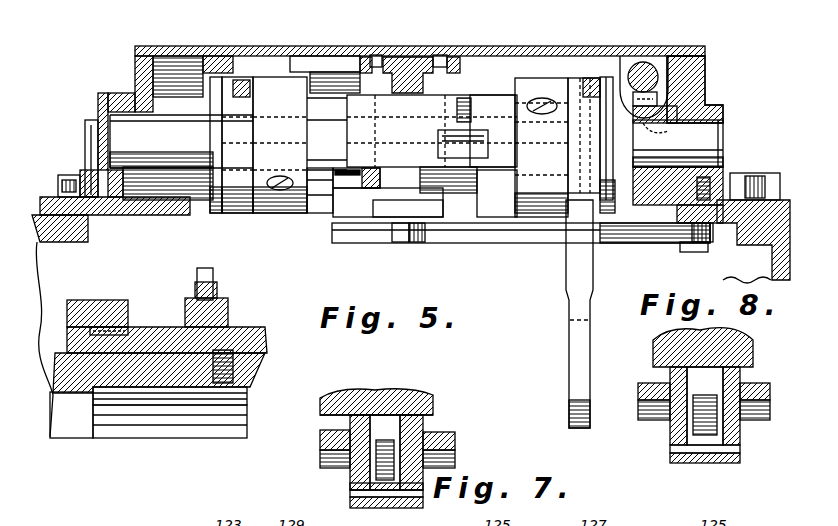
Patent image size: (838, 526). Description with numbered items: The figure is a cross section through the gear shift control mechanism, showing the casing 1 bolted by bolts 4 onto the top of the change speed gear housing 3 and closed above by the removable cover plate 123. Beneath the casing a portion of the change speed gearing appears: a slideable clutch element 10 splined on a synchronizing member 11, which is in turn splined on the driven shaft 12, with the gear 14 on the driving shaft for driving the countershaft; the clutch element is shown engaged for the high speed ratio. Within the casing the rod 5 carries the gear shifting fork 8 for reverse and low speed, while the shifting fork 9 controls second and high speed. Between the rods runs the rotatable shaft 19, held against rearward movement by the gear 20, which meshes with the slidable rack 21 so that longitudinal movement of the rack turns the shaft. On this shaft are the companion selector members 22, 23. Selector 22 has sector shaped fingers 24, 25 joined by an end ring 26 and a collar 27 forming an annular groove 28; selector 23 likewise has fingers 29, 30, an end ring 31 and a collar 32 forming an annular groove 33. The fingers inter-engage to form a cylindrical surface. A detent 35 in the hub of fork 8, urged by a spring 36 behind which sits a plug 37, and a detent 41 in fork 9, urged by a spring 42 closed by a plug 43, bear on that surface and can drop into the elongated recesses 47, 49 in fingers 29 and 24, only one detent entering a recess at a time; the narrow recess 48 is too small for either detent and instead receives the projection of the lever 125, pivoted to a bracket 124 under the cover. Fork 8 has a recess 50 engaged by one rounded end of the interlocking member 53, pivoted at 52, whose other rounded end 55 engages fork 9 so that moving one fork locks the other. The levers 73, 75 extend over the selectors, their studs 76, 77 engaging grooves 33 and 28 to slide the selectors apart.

In FIG. 5, the casing 1 is at (705, 105).
In FIG. 5, the change speed gear housing 3 is at (790, 225).
In FIG. 5, the bolts 4 is at (103, 93).
In FIG. 5, the rod 5 is at (90, 117).
In FIG. 5, the gear shifting fork 8 is at (593, 282).
In FIG. 5, the shifting fork 9 is at (214, 274).
In FIG. 7, the shifting fork 9 is at (455, 440).
In FIG. 8, the shifting fork 9 is at (745, 392).
In FIG. 5, the slideable clutch element 10 is at (228, 318).
In FIG. 5, the synchronizing member 11 is at (250, 367).
In FIG. 5, the driven shaft 12 is at (248, 403).
In FIG. 5, the gear 14 is at (105, 317).
In FIG. 5, the rotatable shaft 19 is at (707, 140).
In FIG. 5, the gear 20 is at (655, 105).
In FIG. 5, the slidable rack 21 is at (645, 62).
In FIG. 5, the selector member 22 is at (232, 185).
In FIG. 5, the selector member 23 is at (614, 192).
In FIG. 5, the sector shaped finger 24 is at (322, 183).
In FIG. 7, the sector shaped finger 24 is at (425, 395).
In FIG. 5, the sector shaped finger 25 is at (322, 112).
In FIG. 5, the end ring 26 is at (217, 103).
In FIG. 5, the collar 27 is at (284, 92).
In FIG. 5, the annular groove 28 is at (229, 105).
In FIG. 5, the sector shaped finger 29 is at (493, 107).
In FIG. 5, the sector shaped finger 30 is at (497, 183).
In FIG. 8, the sector shaped finger 30 is at (748, 340).
In FIG. 5, the end ring 31 is at (606, 77).
In FIG. 5, the collar 32 is at (527, 90).
In FIG. 5, the annular groove 33 is at (585, 155).
In FIG. 8, the detent 35 is at (740, 425).
In FIG. 8, the spring 36 is at (735, 458).
In FIG. 8, the plug 37 is at (700, 453).
In FIG. 5, the detent 41 is at (362, 202).
In FIG. 7, the detent 41 is at (423, 422).
In FIG. 7, the spring 42 is at (350, 486).
In FIG. 7, the plug 43 is at (392, 508).
In FIG. 5, the elongated recess 47 is at (452, 147).
In FIG. 5, the narrow recess 48 is at (463, 98).
In FIG. 5, the elongated recess 49 is at (347, 190).
In FIG. 7, the elongated recess 49 is at (370, 390).
In FIG. 5, the recess 50 is at (416, 243).
In FIG. 5, the pivot 52 is at (703, 238).
In FIG. 5, the interlocking member 53 is at (545, 244).
In FIG. 5, the rounded end 55 is at (402, 243).
In FIG. 5, the lever 73 is at (574, 76).
In FIG. 5, the lever 75 is at (244, 79).
In FIG. 5, the stud 76 is at (540, 114).
In FIG. 5, the stud 77 is at (258, 122).
In FIG. 5, the cover plate 123 is at (326, 72).
In FIG. 5, the bracket 124 is at (441, 56).
In FIG. 5, the lever 125 is at (410, 57).